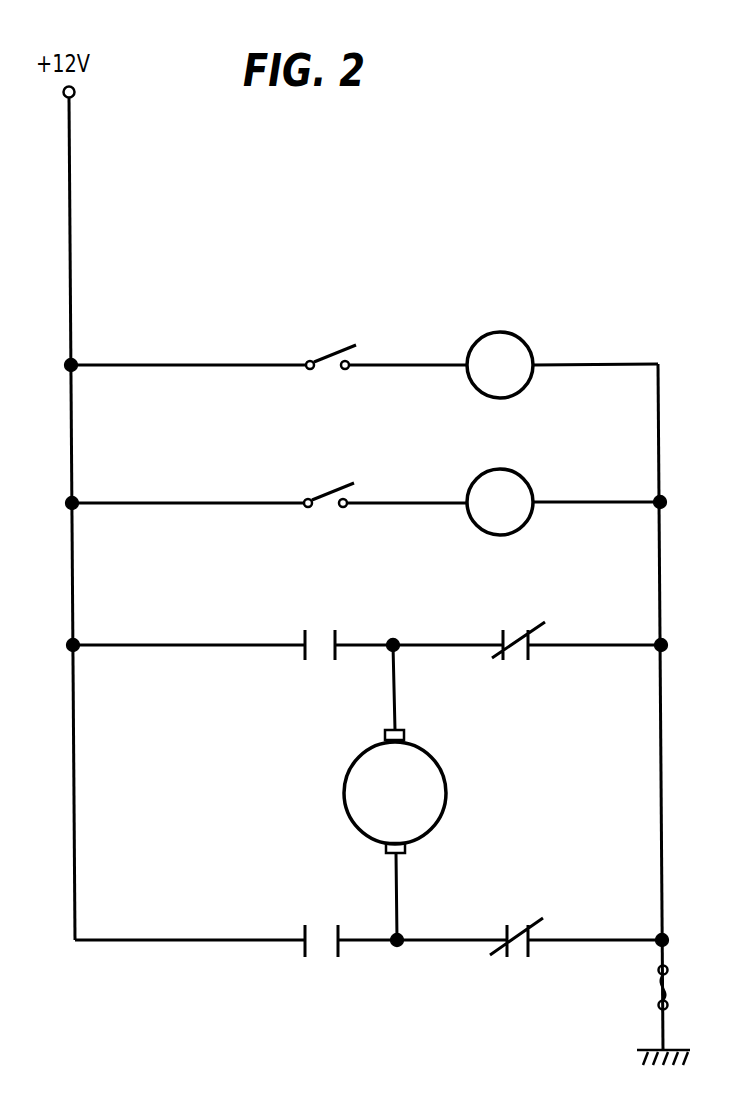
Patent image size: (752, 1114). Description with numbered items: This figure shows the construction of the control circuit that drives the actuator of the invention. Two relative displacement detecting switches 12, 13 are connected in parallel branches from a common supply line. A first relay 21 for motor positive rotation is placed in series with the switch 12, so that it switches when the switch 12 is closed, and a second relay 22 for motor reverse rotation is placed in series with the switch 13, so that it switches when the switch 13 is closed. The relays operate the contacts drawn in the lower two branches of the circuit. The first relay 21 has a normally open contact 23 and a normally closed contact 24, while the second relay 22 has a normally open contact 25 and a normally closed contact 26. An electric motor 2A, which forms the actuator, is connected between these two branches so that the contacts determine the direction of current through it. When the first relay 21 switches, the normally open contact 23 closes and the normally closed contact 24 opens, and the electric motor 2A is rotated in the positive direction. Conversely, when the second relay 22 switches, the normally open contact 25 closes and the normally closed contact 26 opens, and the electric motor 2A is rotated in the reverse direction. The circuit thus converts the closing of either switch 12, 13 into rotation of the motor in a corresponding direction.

The relative displacement detecting switch 12 is at (330, 344).
The relative displacement detecting switch 13 is at (328, 482).
The first relay 21 is at (525, 334).
The second relay 22 is at (525, 472).
The normally open contact 23 is at (303, 925).
The normally closed contact 24 is at (531, 926).
The normally open contact 25 is at (336, 643).
The normally closed contact 26 is at (535, 634).
The electric motor 2A is at (447, 772).